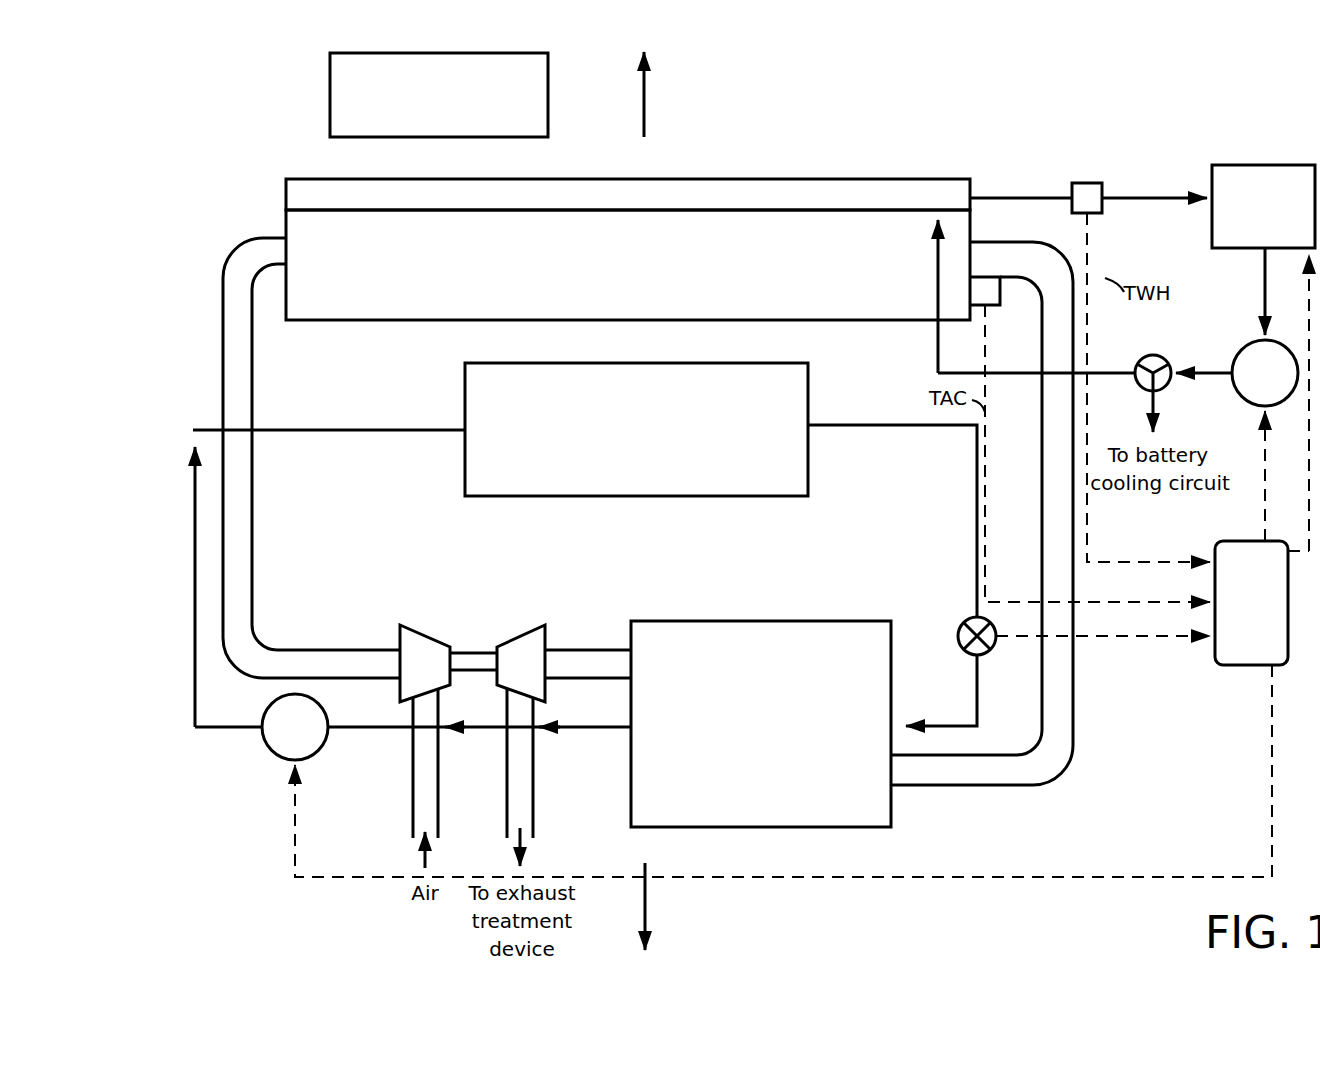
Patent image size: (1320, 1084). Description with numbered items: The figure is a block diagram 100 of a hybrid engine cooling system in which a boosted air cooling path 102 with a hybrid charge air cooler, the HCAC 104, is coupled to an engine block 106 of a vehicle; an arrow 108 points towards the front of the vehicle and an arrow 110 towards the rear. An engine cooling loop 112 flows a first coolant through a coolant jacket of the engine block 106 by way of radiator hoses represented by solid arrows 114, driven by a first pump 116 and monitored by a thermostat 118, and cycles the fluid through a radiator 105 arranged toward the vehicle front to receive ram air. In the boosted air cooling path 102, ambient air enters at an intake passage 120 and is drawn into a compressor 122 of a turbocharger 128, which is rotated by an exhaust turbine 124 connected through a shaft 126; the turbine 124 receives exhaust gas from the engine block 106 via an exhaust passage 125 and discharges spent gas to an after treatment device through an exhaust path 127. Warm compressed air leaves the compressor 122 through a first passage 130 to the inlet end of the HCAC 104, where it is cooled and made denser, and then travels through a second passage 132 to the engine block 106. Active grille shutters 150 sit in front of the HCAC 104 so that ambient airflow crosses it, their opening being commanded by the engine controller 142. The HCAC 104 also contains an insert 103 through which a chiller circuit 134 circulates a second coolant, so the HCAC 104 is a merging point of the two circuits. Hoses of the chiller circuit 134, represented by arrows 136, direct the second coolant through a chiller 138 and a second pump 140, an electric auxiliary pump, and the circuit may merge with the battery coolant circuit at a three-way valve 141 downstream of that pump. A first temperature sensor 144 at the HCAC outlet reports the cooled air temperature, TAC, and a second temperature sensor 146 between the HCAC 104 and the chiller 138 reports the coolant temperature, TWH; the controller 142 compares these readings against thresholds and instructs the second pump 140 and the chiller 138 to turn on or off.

The block diagram 100 is at (183, 132).
The boosted air cooling path 102 is at (198, 310).
The insert 103 is at (628, 194).
The HCAC 104 is at (628, 265).
The radiator 105 is at (636, 429).
The engine block 106 is at (761, 724).
The arrow 108 is at (646, 85).
The arrow 110 is at (647, 890).
The engine cooling loop 112 is at (158, 620).
The solid arrows 114 is at (193, 470).
The first pump 116 is at (295, 727).
The thermostat 118 is at (963, 622).
The intake passage 120 is at (425, 775).
The compressor 122 is at (425, 663).
The exhaust turbine 124 is at (521, 663).
The exhaust passage 125 is at (588, 664).
The shaft 126 is at (474, 652).
The exhaust path 127 is at (513, 770).
The turbocharger 128 is at (510, 597).
The first passage 130 is at (237, 487).
The second passage 132 is at (1044, 432).
The chiller circuit 134 is at (1187, 165).
The arrows 136 is at (1005, 198).
The chiller 138 is at (1263, 358).
The second pump 140 is at (1237, 440).
The three-way valve 141 is at (1160, 355).
The engine controller 142 is at (791, 709).
The first temperature sensor 144 is at (1001, 296).
The second temperature sensor 146 is at (1090, 183).
The active grille shutters 150 is at (439, 95).